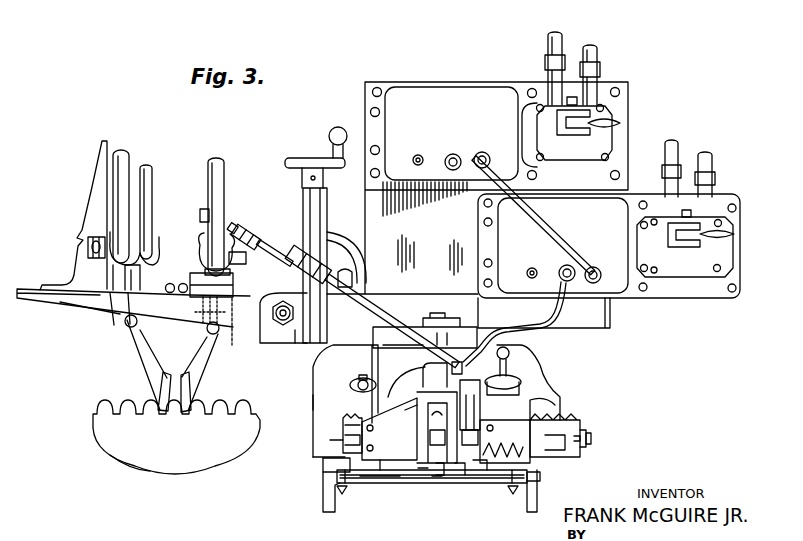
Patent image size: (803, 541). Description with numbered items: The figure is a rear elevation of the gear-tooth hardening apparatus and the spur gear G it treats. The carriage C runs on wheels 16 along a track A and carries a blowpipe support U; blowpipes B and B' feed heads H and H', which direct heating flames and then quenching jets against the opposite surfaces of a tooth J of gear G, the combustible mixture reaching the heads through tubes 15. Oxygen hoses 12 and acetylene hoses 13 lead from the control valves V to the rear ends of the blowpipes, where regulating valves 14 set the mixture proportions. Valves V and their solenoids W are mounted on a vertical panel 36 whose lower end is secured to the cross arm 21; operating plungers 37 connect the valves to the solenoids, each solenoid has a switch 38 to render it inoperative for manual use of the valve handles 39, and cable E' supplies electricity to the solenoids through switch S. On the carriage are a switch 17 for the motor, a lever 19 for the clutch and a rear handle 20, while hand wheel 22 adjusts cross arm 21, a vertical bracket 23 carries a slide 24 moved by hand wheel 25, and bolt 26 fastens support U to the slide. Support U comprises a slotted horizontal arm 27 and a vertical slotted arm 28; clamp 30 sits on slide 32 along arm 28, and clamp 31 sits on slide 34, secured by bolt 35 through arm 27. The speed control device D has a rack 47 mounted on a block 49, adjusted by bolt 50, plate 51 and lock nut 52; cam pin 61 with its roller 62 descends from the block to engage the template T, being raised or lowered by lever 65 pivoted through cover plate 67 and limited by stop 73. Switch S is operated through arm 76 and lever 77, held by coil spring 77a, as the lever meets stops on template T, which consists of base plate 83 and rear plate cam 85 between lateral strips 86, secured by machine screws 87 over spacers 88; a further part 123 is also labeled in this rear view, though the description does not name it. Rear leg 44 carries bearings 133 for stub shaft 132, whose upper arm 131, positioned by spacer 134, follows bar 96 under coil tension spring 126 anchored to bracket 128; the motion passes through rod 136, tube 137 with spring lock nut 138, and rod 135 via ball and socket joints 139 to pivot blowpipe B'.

The oxygen hoses 12 is at (152, 192).
The acetylene hoses 13 is at (118, 208).
The regulating valves 14 is at (88, 249).
The tubes 15 is at (129, 327).
The wheels 16 is at (318, 458).
The switch 17 is at (320, 388).
The lever 19 is at (509, 353).
The rear handle 20 is at (400, 346).
The cross arm 21 is at (583, 320).
The hand wheel 22 is at (343, 235).
The vertical bracket 23 is at (303, 236).
The slide 24 is at (298, 333).
The hand wheel 25 is at (298, 158).
The bolt 26 is at (270, 343).
The slotted horizontal arm 27 is at (62, 294).
The vertical slotted arm 28 is at (98, 178).
The clamp 30 is at (141, 273).
The clamp 31 is at (200, 257).
The slide 32 is at (114, 299).
The slide 34 is at (233, 285).
The bolt 35 is at (232, 327).
The vertical panel 36 is at (386, 233).
The operating plungers 37 is at (537, 133).
The switch 38 is at (418, 155).
The handles 39 is at (620, 123).
The rear leg 44 is at (388, 476).
The rack 47 is at (361, 393).
The block 49 is at (335, 463).
The bolt 50 is at (591, 440).
The plate 51 is at (586, 432).
The lock nut 52 is at (578, 434).
The cam pin 61 is at (420, 434).
The cam engaging roller 62 is at (424, 472).
The lever 65 is at (330, 440).
The cover plate 67 is at (364, 438).
The stop 73 is at (343, 422).
The arm 76 is at (427, 427).
The lever 77 is at (440, 470).
The coil spring 77a is at (436, 480).
The base plate 83 is at (380, 484).
The rear speed regulating plate cam 85 is at (458, 472).
The lateral strips 86 is at (340, 472).
The machine screws 87 is at (341, 495).
The spacers 88 is at (347, 484).
The bar 96 is at (527, 474).
The pin 123 is at (480, 470).
The coil tension spring 126 is at (547, 442).
The angle shaped bracket 128 is at (530, 417).
The upper arm 131 is at (470, 402).
The stub shaft 132 is at (492, 430).
The bearings 133 is at (472, 418).
The spacer 134 is at (532, 390).
The rod 135 is at (280, 255).
The rod 136 is at (470, 352).
The spring chuck or tube 137 is at (372, 308).
The spring lock nut 138 is at (338, 272).
The ball and socket joints 139 is at (250, 229).
The track A is at (317, 505).
The blowpipe B is at (141, 248).
The blowpipe B' is at (245, 232).
The carriage C is at (305, 403).
The speed control device D is at (410, 383).
The cable E' is at (533, 215).
The gear G is at (150, 470).
The head H is at (142, 365).
The head H' is at (210, 373).
The tooth J is at (178, 416).
The switch S is at (412, 416).
The template T is at (400, 482).
The blowpipe support U is at (95, 314).
The valves V is at (566, 166).
The solenoids W is at (459, 78).